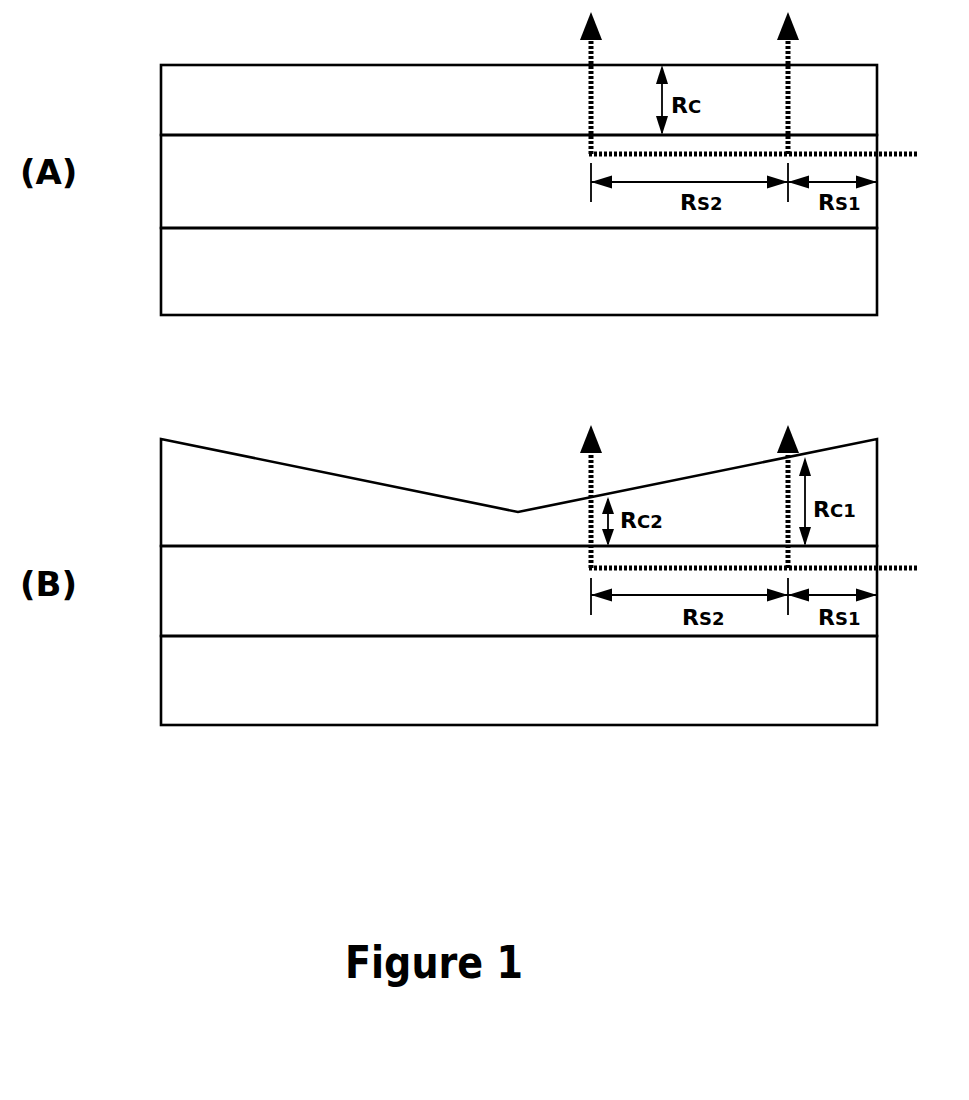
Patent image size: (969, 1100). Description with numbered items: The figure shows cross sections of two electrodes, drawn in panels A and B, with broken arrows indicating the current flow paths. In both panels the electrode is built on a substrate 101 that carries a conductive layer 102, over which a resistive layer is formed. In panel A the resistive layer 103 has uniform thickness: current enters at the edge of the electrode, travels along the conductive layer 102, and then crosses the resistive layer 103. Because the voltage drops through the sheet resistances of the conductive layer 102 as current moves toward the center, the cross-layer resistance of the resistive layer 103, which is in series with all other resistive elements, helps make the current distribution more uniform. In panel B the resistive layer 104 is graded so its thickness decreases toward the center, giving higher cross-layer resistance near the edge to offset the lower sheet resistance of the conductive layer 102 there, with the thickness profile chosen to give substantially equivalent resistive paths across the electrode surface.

The substrate 101 is at (238, 283).
The conductive layer 102 is at (238, 185).
The resistive layer of uniform thickness 103 is at (238, 106).
The resistive layer of graded thickness 104 is at (238, 510).